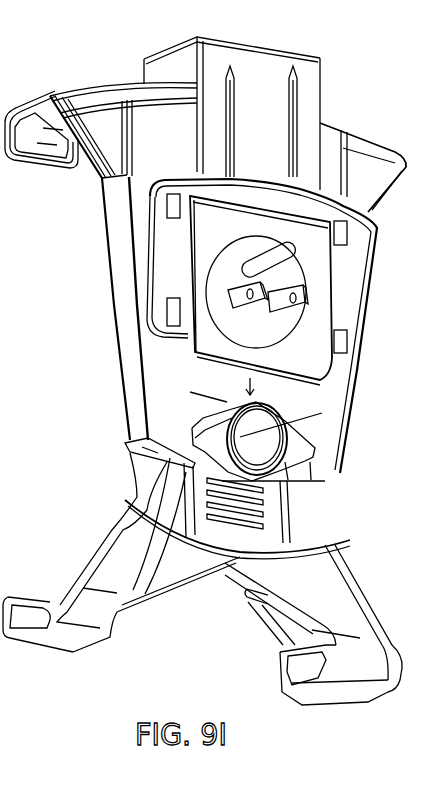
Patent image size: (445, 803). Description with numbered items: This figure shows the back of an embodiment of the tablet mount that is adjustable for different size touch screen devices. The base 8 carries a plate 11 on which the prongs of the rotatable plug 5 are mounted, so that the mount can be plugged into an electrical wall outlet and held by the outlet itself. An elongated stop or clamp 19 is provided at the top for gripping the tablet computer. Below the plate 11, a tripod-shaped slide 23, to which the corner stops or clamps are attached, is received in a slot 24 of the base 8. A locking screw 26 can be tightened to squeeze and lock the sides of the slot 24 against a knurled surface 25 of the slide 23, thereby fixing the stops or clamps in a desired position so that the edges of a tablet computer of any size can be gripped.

The rotatable plug 5 is at (240, 272).
The base 8 is at (317, 418).
The plate 11 is at (312, 260).
The elongated stop or clamp 19 is at (365, 172).
The tripod-shaped slide 23 is at (177, 495).
The slot 24 is at (125, 445).
The knurled surface 25 is at (265, 512).
The locking screw 26 is at (235, 412).